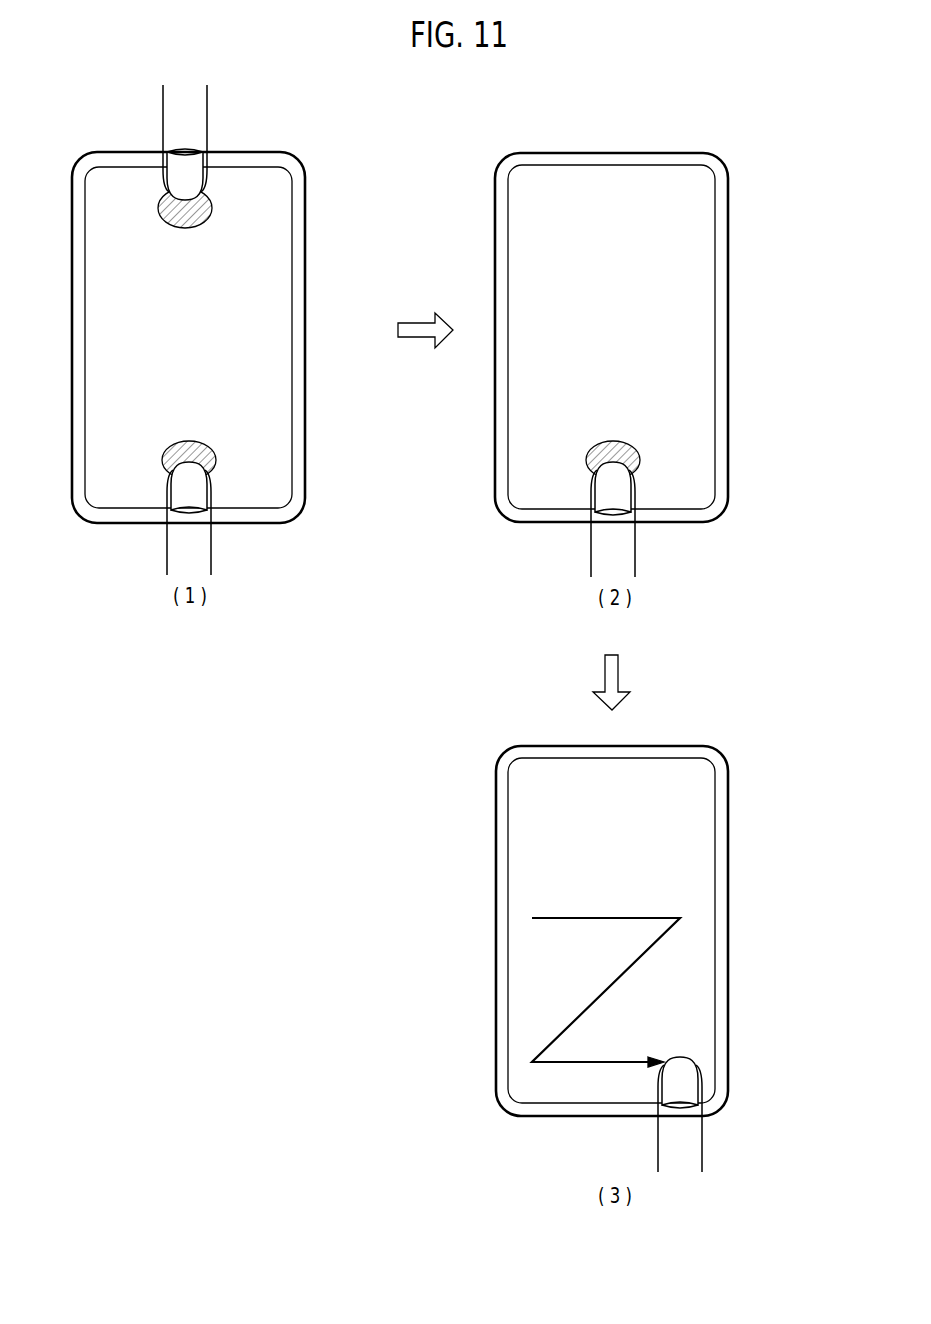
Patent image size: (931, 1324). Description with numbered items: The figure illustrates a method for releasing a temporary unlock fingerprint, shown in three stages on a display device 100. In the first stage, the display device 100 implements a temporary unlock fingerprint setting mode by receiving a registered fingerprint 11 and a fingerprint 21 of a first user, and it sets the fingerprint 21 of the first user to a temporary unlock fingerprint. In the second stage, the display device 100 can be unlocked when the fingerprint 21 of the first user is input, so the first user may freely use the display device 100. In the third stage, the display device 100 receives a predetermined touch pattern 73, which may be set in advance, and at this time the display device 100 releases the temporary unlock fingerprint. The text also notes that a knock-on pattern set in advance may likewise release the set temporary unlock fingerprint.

The display device 100 is at (305, 318).
The fingerprint of a first user 21 is at (212, 208).
The registered fingerprint 11 is at (216, 460).
The touch pattern 73 is at (627, 1060).